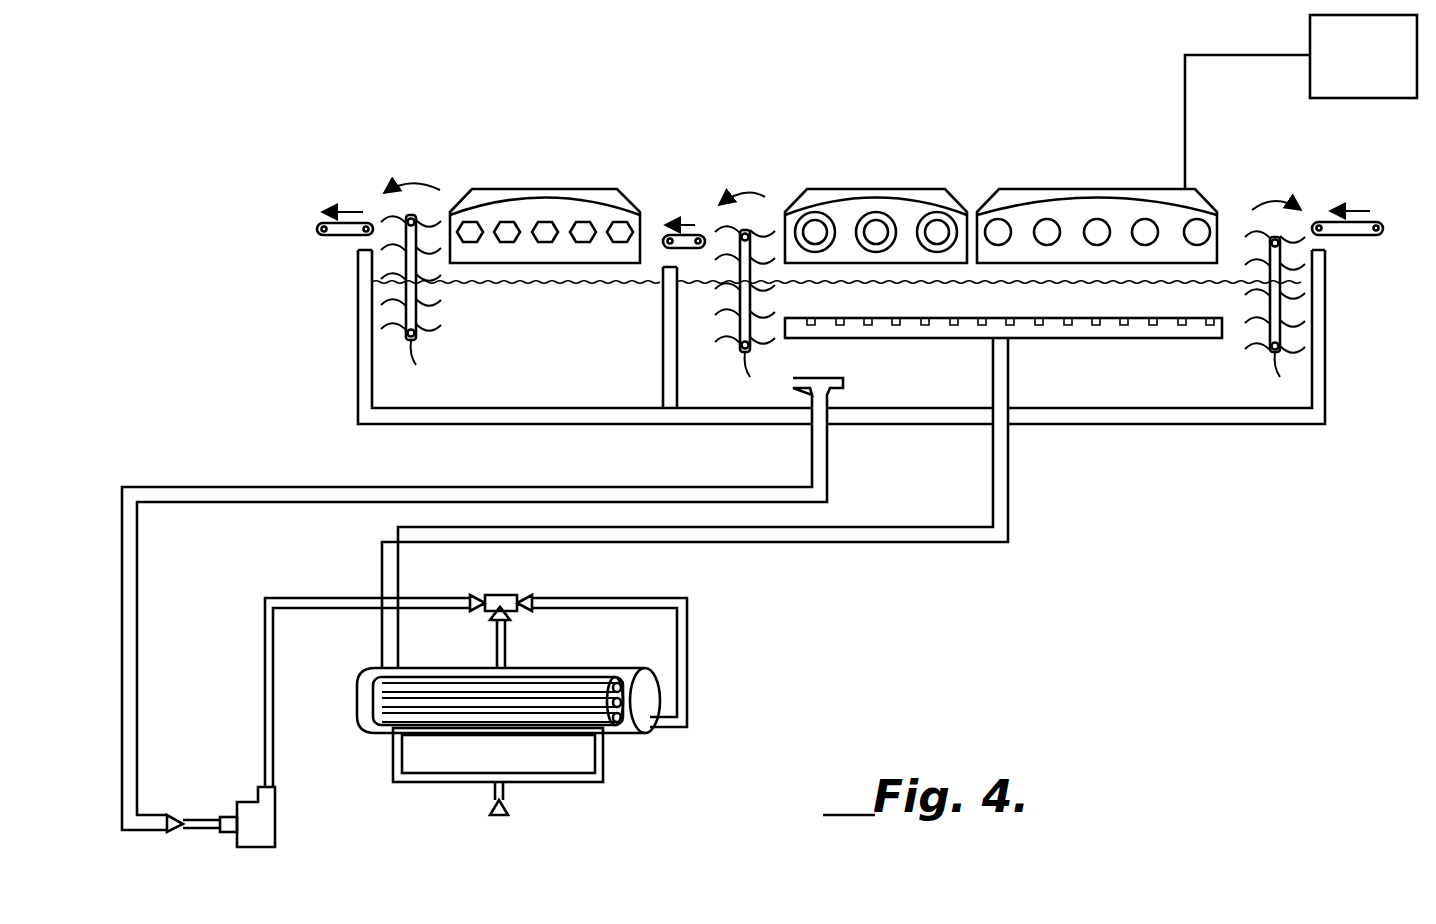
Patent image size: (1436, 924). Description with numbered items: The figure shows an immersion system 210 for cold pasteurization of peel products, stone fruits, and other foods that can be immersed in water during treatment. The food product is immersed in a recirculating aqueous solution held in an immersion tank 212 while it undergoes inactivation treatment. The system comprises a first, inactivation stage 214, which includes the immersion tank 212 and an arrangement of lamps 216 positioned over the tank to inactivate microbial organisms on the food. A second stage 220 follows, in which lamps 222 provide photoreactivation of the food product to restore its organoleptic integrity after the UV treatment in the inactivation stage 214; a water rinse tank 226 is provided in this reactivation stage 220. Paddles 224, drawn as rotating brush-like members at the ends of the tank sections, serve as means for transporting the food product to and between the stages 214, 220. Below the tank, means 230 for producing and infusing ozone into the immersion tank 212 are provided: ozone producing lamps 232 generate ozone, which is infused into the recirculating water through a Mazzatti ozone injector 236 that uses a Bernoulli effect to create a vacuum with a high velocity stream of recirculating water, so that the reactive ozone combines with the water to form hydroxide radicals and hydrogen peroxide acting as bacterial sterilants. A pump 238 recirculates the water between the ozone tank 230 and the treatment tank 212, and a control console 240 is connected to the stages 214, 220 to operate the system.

The immersion system 210 is at (288, 161).
The immersion tank 212 is at (1098, 392).
The first inactivation stage 214 is at (1058, 173).
The lamps 216 is at (905, 189).
The second stage 220 is at (657, 196).
The lamps 222 is at (482, 190).
The paddles 224 is at (376, 210).
The water rinse tank 226 is at (538, 390).
The ozone producing and infusing means 230 is at (724, 648).
The ozone producing lamps 232 is at (577, 718).
The Mazzatti ozone injector 236 is at (535, 595).
The pump 238 is at (245, 798).
The control console 240 is at (1355, 100).